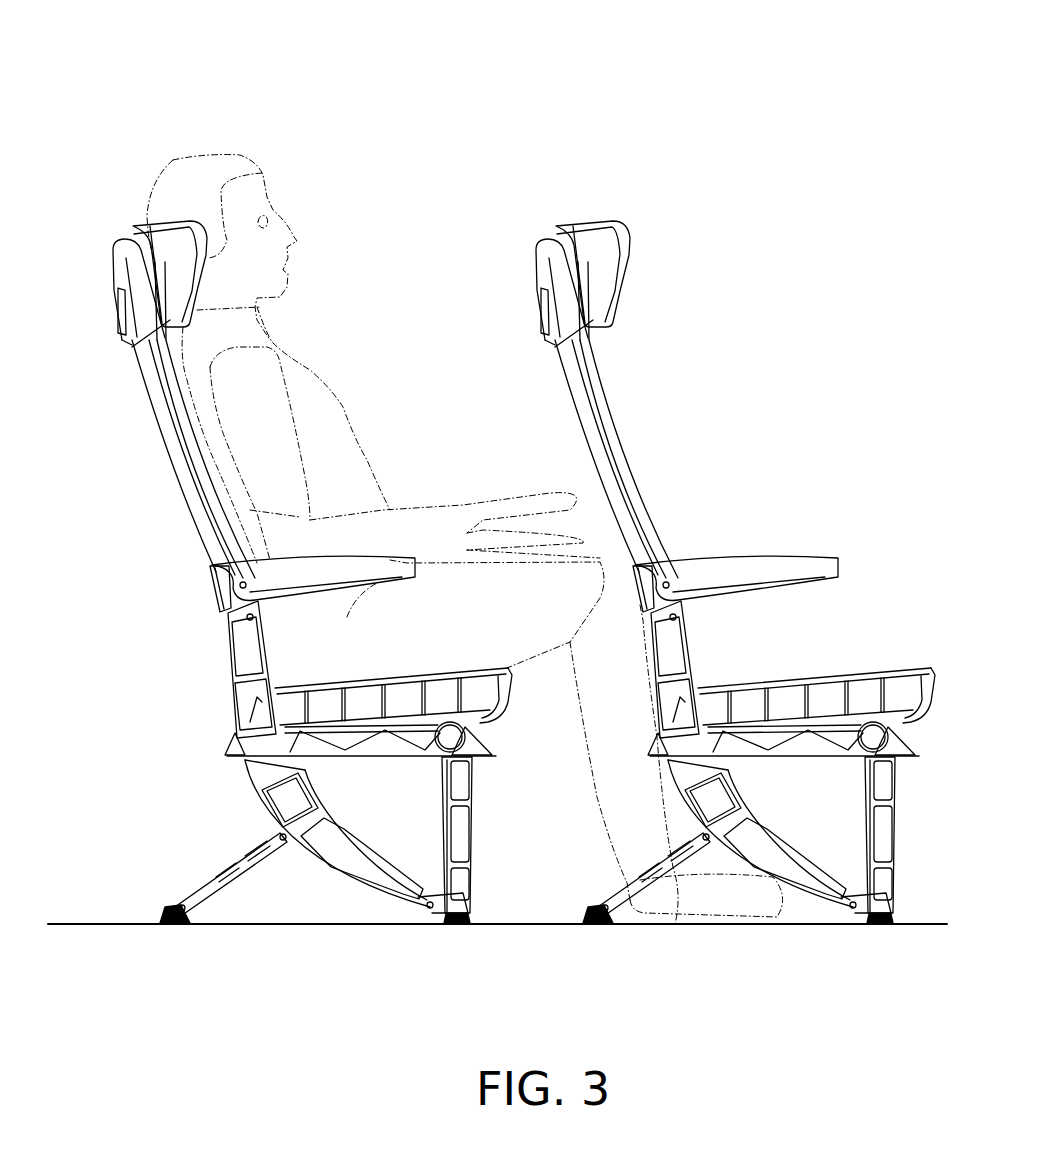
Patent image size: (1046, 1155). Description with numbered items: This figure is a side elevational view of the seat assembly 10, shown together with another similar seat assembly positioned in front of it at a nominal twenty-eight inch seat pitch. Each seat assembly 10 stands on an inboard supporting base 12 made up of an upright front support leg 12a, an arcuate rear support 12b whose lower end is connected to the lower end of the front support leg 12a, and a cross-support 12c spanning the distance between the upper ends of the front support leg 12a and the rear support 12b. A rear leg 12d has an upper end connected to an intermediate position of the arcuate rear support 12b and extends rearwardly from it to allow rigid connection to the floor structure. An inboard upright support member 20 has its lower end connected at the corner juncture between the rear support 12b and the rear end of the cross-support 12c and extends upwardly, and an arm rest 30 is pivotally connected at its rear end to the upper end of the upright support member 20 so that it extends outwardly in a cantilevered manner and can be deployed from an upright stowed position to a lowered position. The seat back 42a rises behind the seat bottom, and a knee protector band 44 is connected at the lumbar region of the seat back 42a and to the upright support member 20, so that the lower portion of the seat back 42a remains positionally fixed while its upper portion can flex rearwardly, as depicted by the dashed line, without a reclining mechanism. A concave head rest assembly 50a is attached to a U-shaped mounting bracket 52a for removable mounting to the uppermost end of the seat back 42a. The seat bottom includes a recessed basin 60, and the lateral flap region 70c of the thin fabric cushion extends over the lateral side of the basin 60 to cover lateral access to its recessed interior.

The seat assembly 10 is at (440, 96).
The inboard supporting base 12 is at (345, 877).
The upright front support leg 12a is at (473, 825).
The arcuate rear support 12b is at (257, 810).
The cross-support 12c is at (400, 757).
The rear leg 12d is at (213, 880).
The inboard upright support member 20 is at (228, 650).
The arm rest 30 is at (337, 567).
The seat back 42a is at (166, 387).
The knee protector band 44 is at (225, 577).
The concave head rest assembly 50a is at (173, 250).
The U-shaped mounting bracket 52a is at (113, 253).
The recessed basin 60 is at (340, 753).
The lateral flap region 70c is at (404, 710).